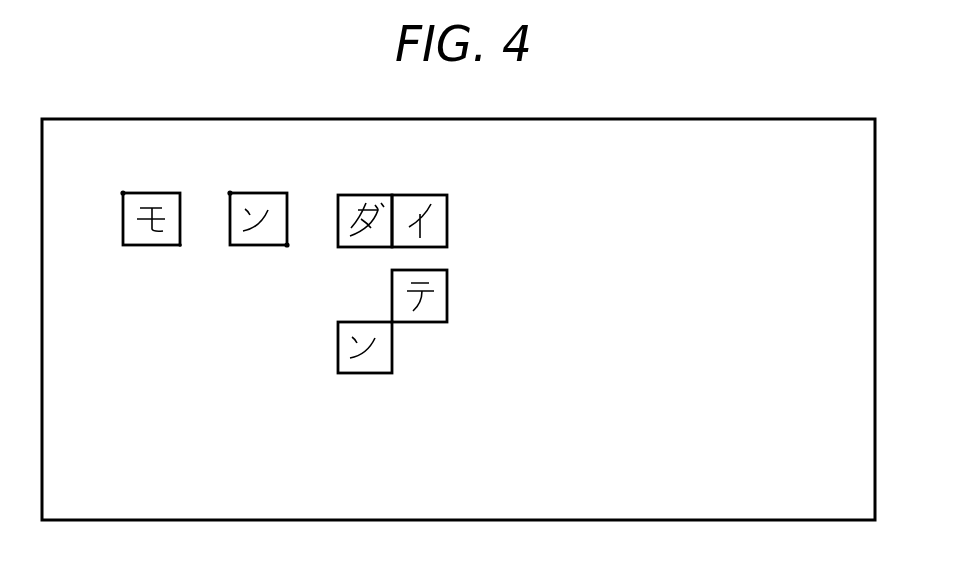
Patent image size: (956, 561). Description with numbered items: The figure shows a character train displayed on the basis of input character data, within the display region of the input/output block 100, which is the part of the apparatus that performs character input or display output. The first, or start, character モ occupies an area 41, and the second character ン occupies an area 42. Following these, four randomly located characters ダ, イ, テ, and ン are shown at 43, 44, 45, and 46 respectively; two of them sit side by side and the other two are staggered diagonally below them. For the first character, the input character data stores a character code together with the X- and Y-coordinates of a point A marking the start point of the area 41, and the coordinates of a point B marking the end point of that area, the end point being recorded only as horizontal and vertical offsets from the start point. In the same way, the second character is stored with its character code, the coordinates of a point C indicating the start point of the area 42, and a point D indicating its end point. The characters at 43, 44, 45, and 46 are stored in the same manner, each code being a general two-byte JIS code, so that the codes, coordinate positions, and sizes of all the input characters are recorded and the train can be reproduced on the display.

The input/output (I/O) block 100 is at (800, 119).
The area of the first character 41 is at (158, 193).
The area of the second character 42 is at (268, 193).
The randomly located character ダ 43 is at (384, 195).
The randomly located character イ 44 is at (438, 195).
The randomly located character テ 45 is at (447, 286).
The randomly located character ン 46 is at (392, 356).
The point A is at (123, 193).
The point B is at (180, 245).
The point C is at (230, 193).
The point D is at (287, 245).